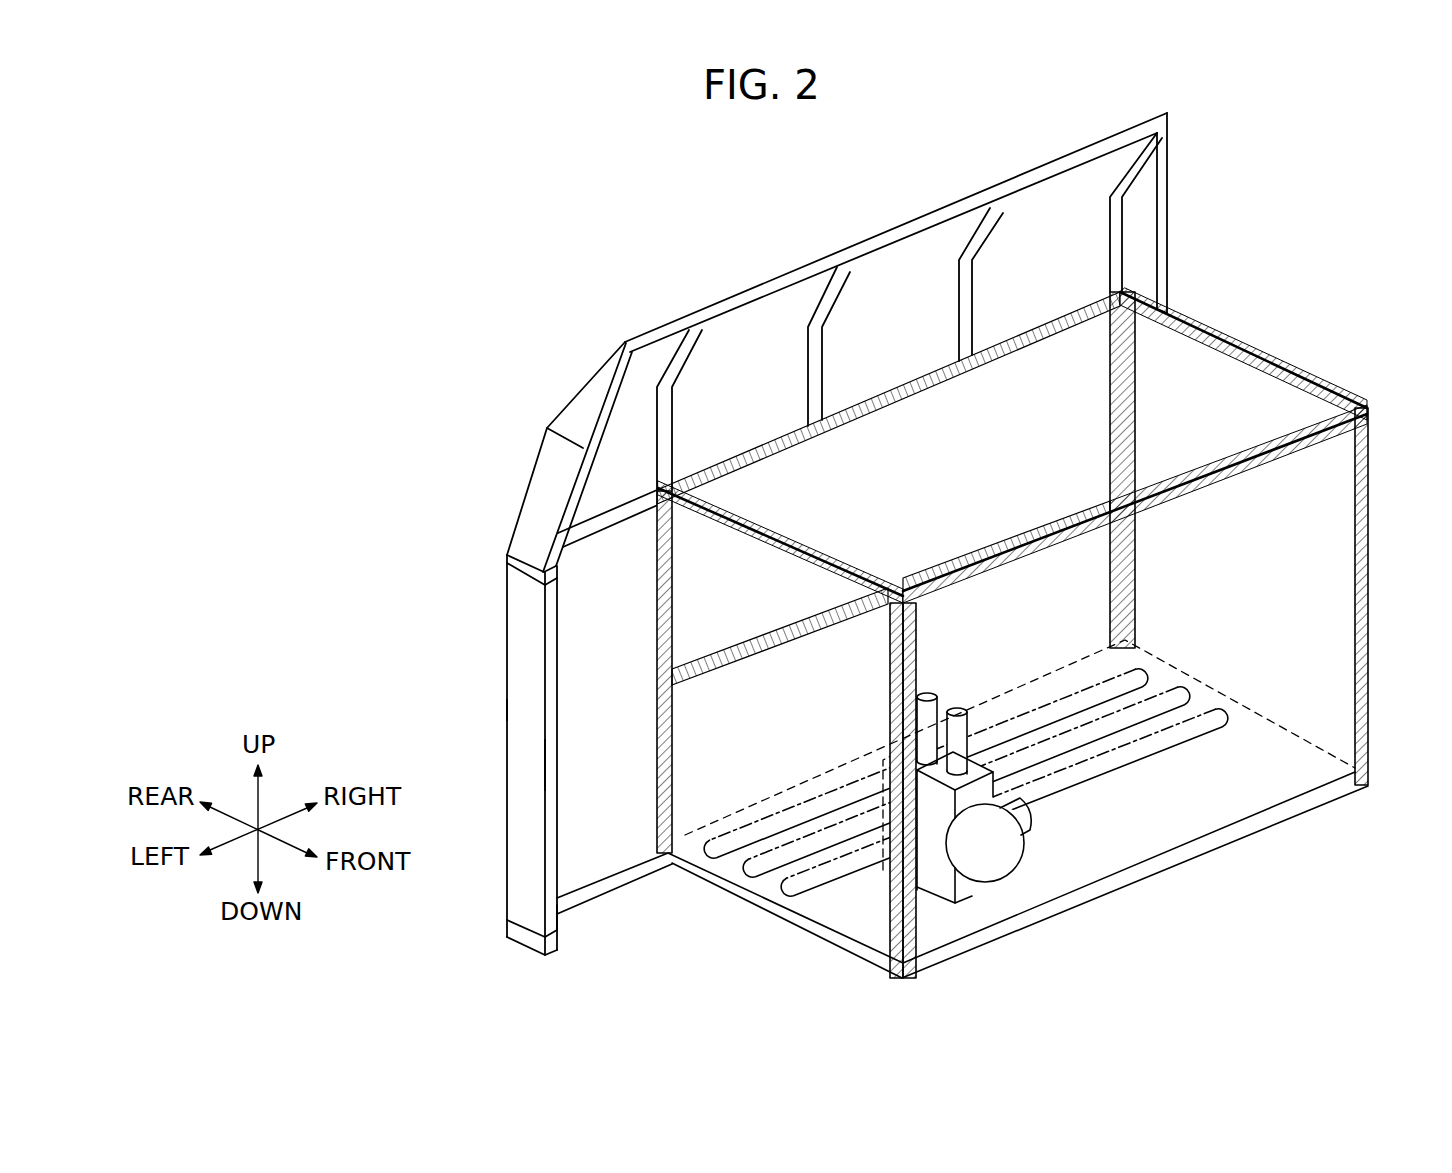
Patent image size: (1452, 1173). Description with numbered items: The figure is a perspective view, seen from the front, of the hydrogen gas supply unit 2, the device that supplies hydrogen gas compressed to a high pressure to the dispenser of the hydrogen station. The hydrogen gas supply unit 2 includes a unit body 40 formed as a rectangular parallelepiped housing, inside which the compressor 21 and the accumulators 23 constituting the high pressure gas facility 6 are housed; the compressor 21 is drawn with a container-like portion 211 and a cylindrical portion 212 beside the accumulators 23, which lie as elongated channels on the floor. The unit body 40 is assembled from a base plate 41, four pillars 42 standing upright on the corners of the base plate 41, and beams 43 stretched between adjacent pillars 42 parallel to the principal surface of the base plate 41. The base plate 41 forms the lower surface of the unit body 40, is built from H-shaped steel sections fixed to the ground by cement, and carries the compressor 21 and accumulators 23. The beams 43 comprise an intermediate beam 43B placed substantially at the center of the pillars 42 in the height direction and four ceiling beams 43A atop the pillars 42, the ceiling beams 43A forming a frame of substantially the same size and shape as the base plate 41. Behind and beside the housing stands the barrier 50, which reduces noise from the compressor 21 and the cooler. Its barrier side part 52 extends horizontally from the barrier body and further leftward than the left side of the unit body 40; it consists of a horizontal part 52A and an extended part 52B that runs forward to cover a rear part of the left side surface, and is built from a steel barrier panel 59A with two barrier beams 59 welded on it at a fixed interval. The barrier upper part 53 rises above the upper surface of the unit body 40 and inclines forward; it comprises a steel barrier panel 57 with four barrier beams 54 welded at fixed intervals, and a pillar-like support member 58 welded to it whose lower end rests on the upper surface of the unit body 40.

The hydrogen gas supply unit 2 is at (1332, 212).
The high pressure gas facility 6 is at (1019, 786).
The compressor 21 is at (1148, 913).
The container body 211 is at (967, 895).
The cylindrical portion 212 is at (968, 753).
The accumulators 23 is at (1142, 672).
The unit body 40 is at (1348, 348).
The base plate 41 is at (1250, 827).
The pillars 42 is at (672, 588).
The beams 43 is at (1012, 479).
The ceiling beams 43A is at (1195, 318).
The intermediate beam 43B is at (953, 550).
The barrier 50 is at (813, 528).
The barrier side part 52 is at (600, 855).
The horizontal part 52A is at (635, 842).
The extended part 52B is at (525, 710).
The barrier upper part 53 is at (543, 493).
The barrier beams 54 is at (690, 357).
The barrier panel 57 is at (907, 287).
The support member 58 is at (1167, 200).
The barrier beams 59 is at (617, 518).
The barrier panel 59A is at (600, 757).